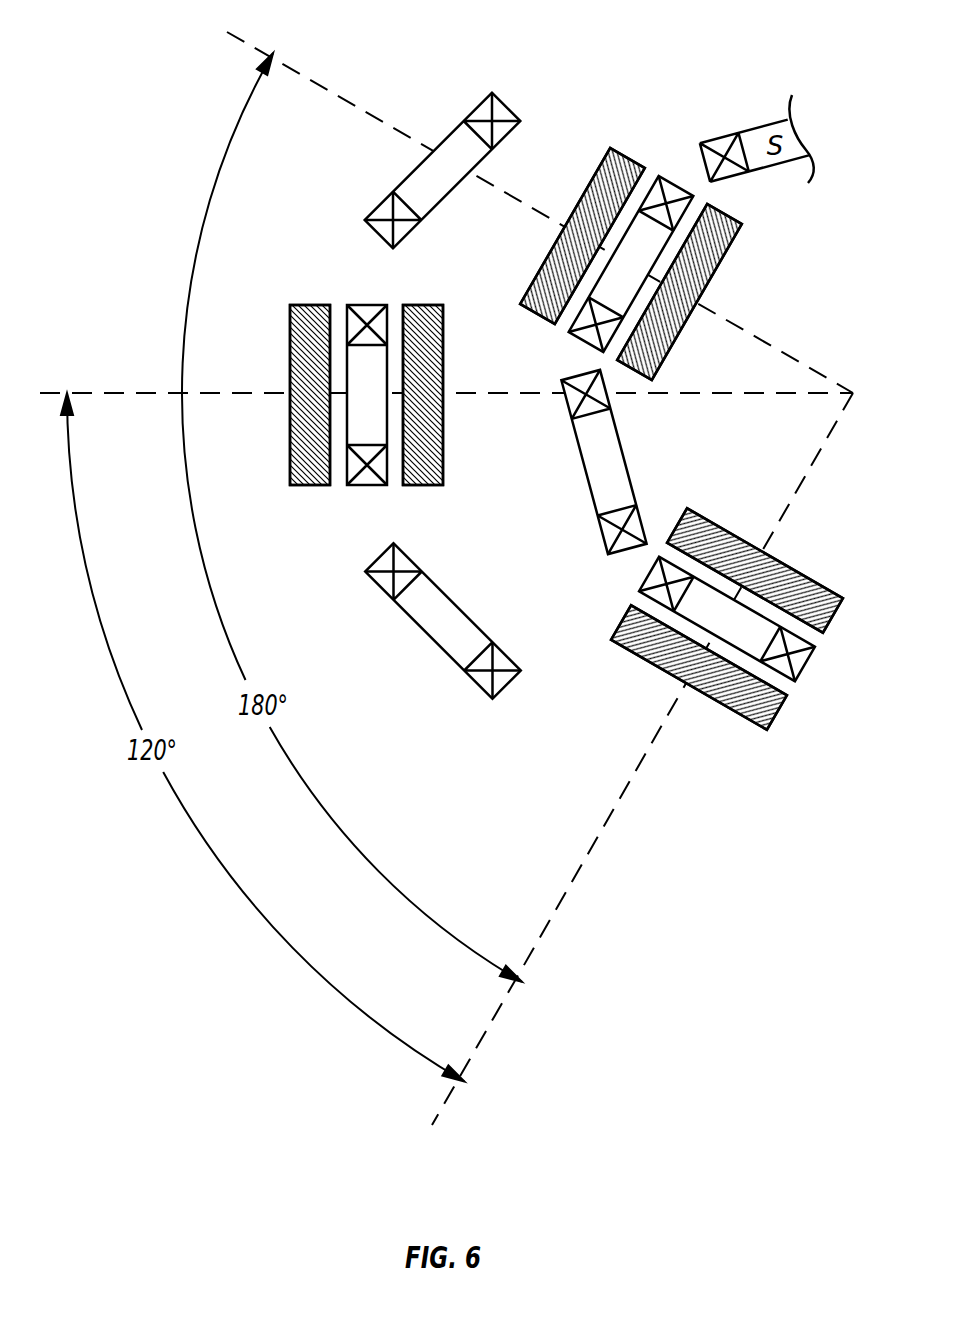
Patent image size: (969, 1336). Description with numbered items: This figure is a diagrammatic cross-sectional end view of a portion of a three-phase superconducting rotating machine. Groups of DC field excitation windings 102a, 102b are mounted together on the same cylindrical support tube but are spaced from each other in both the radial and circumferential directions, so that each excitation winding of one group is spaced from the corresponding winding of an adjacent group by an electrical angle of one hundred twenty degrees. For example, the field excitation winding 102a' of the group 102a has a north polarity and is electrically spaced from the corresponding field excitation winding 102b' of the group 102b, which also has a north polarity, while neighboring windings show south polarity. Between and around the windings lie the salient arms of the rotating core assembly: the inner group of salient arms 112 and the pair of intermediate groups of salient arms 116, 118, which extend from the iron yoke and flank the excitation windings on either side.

The group of DC field excitation windings 102a is at (593, 330).
The field excitation winding 102a' is at (666, 616).
The group of DC field excitation windings 102b is at (442, 390).
The field excitation winding 102b' is at (333, 424).
The inner group of salient arms 112 is at (739, 418).
The intermediate group of salient arms 116 is at (270, 395).
The intermediate group of salient arms 118 is at (595, 439).